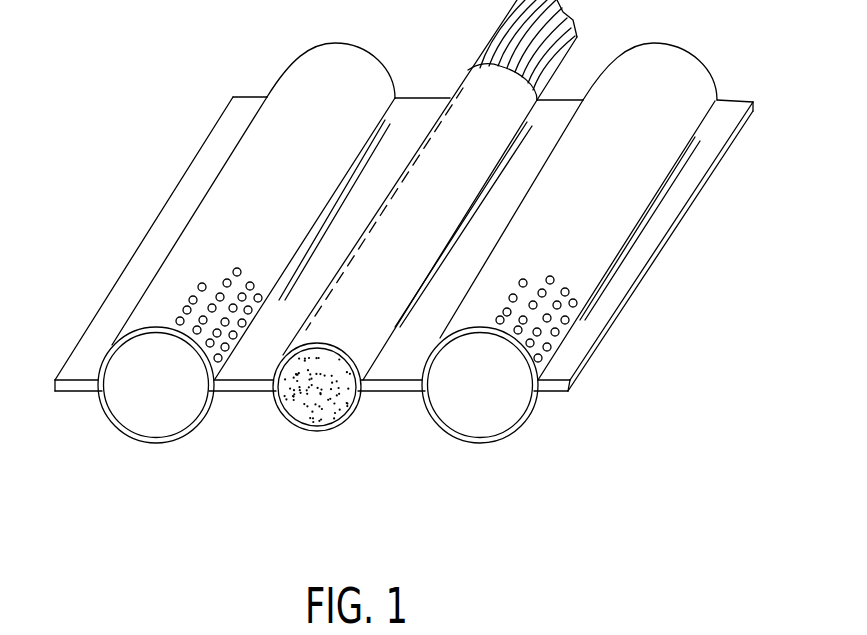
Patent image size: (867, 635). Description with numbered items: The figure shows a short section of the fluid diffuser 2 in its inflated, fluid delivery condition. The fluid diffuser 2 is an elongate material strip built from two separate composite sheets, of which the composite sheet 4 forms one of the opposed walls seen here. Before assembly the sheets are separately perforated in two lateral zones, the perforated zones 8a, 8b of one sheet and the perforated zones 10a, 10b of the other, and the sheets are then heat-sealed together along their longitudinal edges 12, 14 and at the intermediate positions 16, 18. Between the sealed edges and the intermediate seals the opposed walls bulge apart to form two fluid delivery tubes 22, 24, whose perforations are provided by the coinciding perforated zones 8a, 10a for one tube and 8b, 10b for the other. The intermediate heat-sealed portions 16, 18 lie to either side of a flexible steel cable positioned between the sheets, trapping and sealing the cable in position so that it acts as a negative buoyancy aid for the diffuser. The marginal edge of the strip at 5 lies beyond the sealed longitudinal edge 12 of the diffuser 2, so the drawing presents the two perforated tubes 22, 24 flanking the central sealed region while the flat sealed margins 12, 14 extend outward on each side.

The fluid diffuser 2 is at (191, 66).
The composite sheet 4 is at (633, 278).
The plate edge 5 is at (557, 393).
The perforated lateral zone 8a is at (680, 62).
The perforated lateral zone 8b is at (317, 77).
The perforated lateral zone 10a is at (482, 417).
The perforated lateral zone 10b is at (137, 411).
The longitudinal edge 12 is at (672, 202).
The longitudinal edge 14 is at (175, 200).
The heat-sealed intermediate position 16 is at (265, 353).
The heat-sealed intermediate position 18 is at (405, 357).
The fluid delivery tube 22 is at (120, 405).
The fluid delivery tube 24 is at (455, 405).